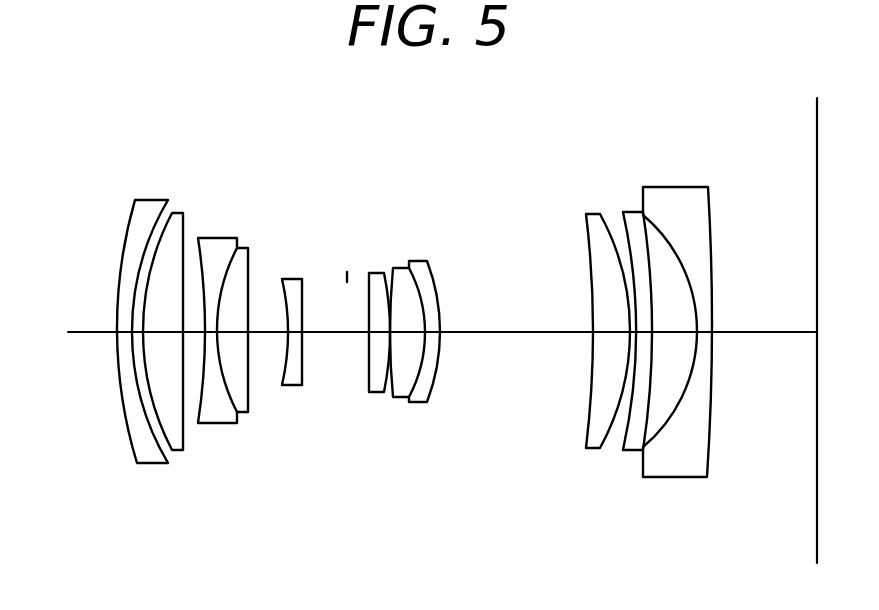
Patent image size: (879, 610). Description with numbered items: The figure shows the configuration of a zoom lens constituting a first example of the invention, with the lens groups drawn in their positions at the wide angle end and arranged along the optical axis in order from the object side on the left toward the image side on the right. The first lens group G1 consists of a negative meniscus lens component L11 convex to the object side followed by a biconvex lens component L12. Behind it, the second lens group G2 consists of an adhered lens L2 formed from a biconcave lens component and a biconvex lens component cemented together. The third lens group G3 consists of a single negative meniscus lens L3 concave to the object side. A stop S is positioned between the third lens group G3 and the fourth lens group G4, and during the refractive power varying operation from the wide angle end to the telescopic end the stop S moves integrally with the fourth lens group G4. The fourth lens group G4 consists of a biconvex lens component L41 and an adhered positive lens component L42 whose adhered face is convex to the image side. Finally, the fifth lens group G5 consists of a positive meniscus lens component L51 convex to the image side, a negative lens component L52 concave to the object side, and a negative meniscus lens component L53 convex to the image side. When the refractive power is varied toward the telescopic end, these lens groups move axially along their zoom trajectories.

The first lens group G1 is at (185, 175).
The second lens group G2 is at (253, 175).
The third lens group G3 is at (320, 175).
The fourth lens group G4 is at (433, 175).
The fifth lens group G5 is at (717, 175).
The negative meniscus lens component L11 is at (145, 467).
The biconvex lens component L12 is at (178, 453).
The adhered lens L2 is at (218, 425).
The negative meniscus lens L3 is at (295, 385).
The stop S is at (346, 387).
The biconvex lens component L41 is at (375, 392).
The adhered positive lens component L42 is at (422, 405).
The positive meniscus lens component L51 is at (587, 449).
The negative lens component L52 is at (630, 450).
The negative meniscus lens component L53 is at (687, 477).